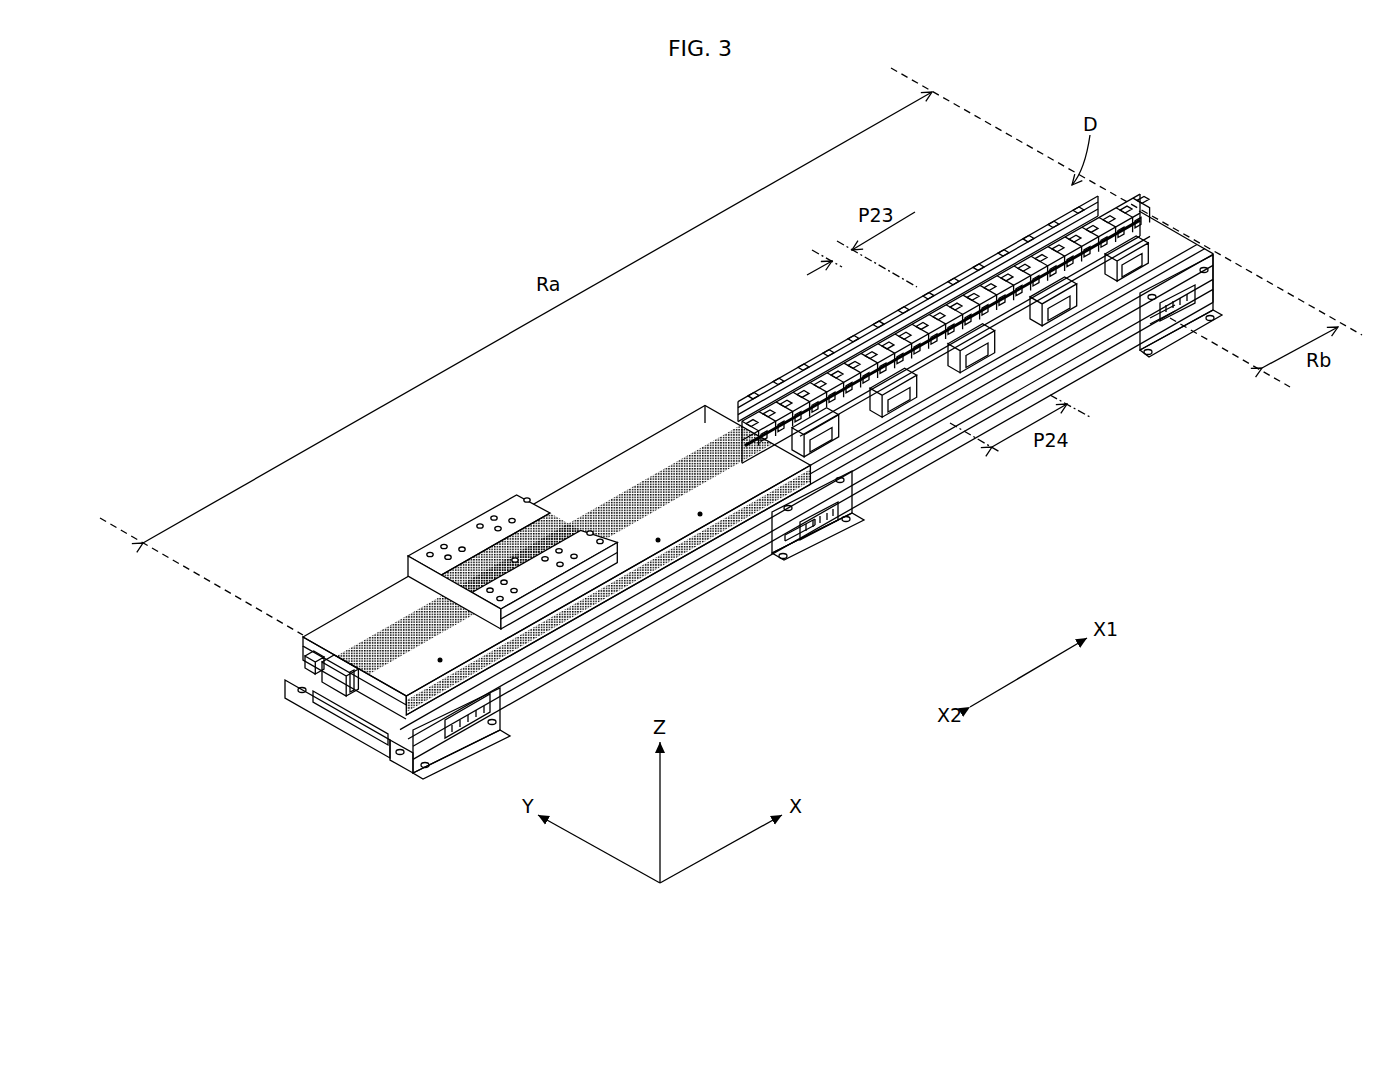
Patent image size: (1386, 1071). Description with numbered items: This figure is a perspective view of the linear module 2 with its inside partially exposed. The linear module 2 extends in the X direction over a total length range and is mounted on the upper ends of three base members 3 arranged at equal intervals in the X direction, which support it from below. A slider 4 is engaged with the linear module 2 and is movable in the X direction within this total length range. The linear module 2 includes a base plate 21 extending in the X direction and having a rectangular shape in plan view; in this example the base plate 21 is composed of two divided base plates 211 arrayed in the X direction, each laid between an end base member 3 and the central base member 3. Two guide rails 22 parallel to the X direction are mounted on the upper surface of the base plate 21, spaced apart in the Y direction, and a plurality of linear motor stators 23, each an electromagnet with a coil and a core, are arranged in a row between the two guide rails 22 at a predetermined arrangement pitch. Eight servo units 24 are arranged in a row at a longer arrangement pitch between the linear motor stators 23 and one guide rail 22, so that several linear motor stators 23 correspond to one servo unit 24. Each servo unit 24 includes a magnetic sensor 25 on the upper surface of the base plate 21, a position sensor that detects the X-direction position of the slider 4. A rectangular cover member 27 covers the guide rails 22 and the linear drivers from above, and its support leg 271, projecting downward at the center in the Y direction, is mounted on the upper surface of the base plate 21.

The linear module 2 is at (973, 535).
The base member 3 is at (400, 750).
The slider 4 is at (495, 530).
The base plate 21 is at (885, 462).
The guide rail 22 is at (1020, 245).
The linear motor stator 23 is at (863, 362).
The servo unit 24 is at (800, 390).
The magnetic sensor 25 is at (913, 407).
The cover member 27 is at (377, 610).
The divided base plate 211 is at (623, 618).
The support leg 271 is at (352, 688).